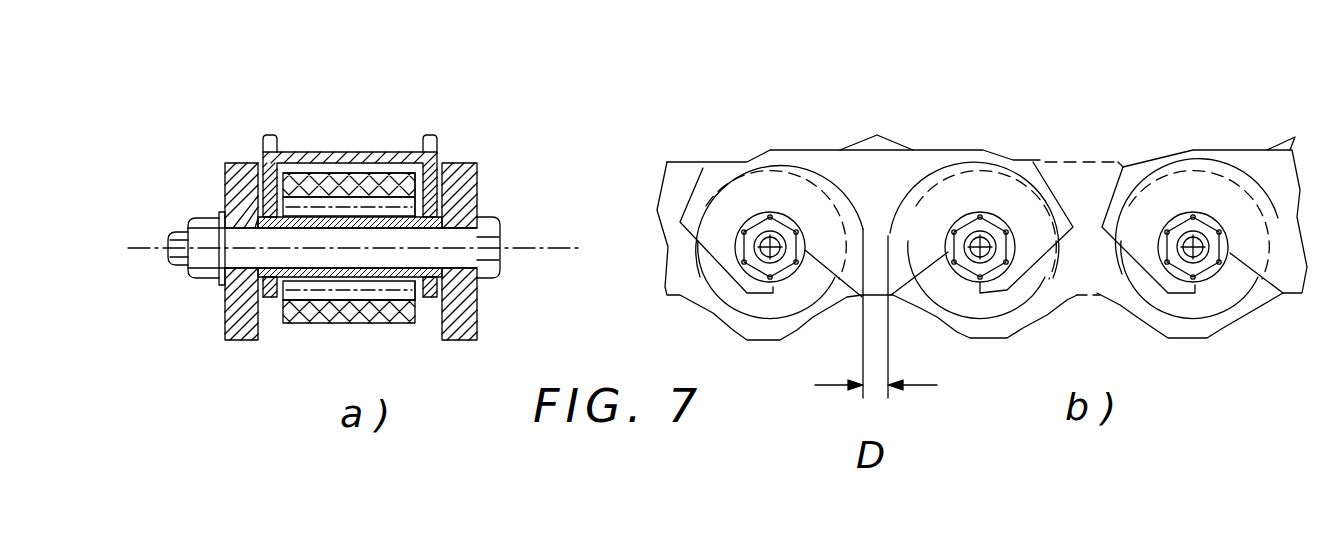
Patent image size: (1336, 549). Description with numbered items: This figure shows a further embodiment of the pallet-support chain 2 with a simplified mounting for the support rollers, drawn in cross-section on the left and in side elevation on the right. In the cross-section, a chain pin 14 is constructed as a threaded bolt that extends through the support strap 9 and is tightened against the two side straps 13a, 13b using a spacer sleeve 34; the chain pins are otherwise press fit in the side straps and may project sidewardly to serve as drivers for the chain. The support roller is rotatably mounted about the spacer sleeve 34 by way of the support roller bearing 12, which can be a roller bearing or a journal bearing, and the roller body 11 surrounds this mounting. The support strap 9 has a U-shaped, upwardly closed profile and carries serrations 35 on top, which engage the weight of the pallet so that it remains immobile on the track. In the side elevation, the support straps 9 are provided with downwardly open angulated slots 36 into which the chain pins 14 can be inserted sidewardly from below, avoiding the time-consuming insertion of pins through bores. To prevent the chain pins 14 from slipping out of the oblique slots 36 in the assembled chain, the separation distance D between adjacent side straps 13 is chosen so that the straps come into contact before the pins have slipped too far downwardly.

The pallet-support chain 2 is at (276, 379).
The support strap 9 is at (270, 163).
The rotor (magnet ring) 11 is at (343, 187).
The support roller bearing 12 is at (383, 172).
The side strap 13 is at (1088, 183).
The side strap 13a is at (237, 193).
The side strap 13b is at (449, 200).
The chain pin 14 is at (175, 266).
The spacer sleeve 34 is at (436, 219).
The serrations 35 is at (268, 136).
The angulated slot 36 is at (1233, 270).